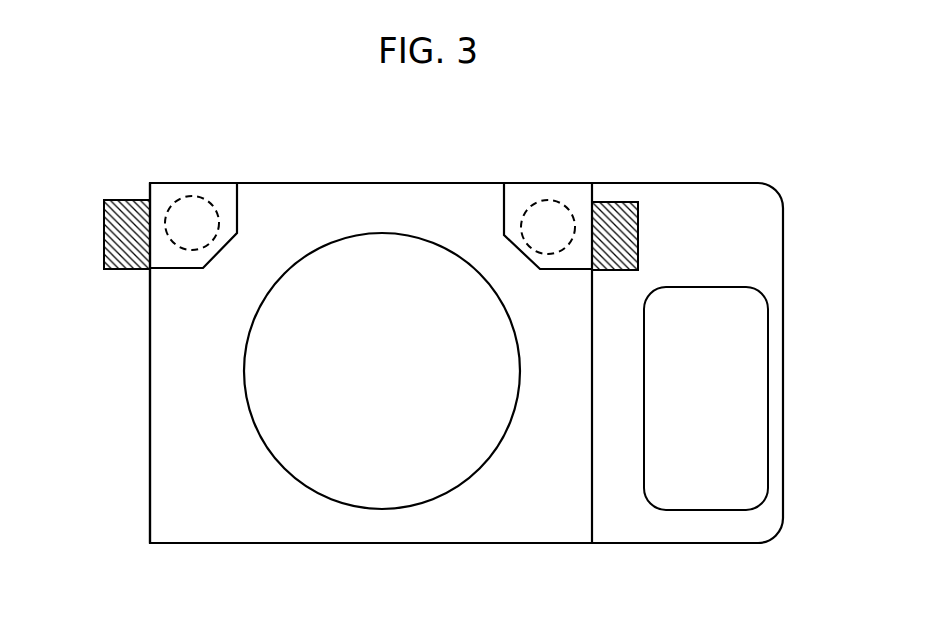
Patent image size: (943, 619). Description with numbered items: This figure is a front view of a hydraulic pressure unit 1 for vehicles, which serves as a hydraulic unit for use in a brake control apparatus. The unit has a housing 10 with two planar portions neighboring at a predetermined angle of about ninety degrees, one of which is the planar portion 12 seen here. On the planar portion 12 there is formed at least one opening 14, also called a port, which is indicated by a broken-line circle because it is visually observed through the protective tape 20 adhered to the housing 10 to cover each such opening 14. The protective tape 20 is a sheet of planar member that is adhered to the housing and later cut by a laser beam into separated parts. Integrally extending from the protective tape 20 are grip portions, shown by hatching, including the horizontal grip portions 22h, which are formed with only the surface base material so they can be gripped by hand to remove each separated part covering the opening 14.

The hydraulic pressure unit 1 is at (680, 155).
The housing 10 is at (341, 177).
The planar portion 12 is at (499, 520).
The opening 14 is at (185, 248).
The protective tape 20 is at (517, 200).
The horizontal grip portion 22h is at (112, 202).